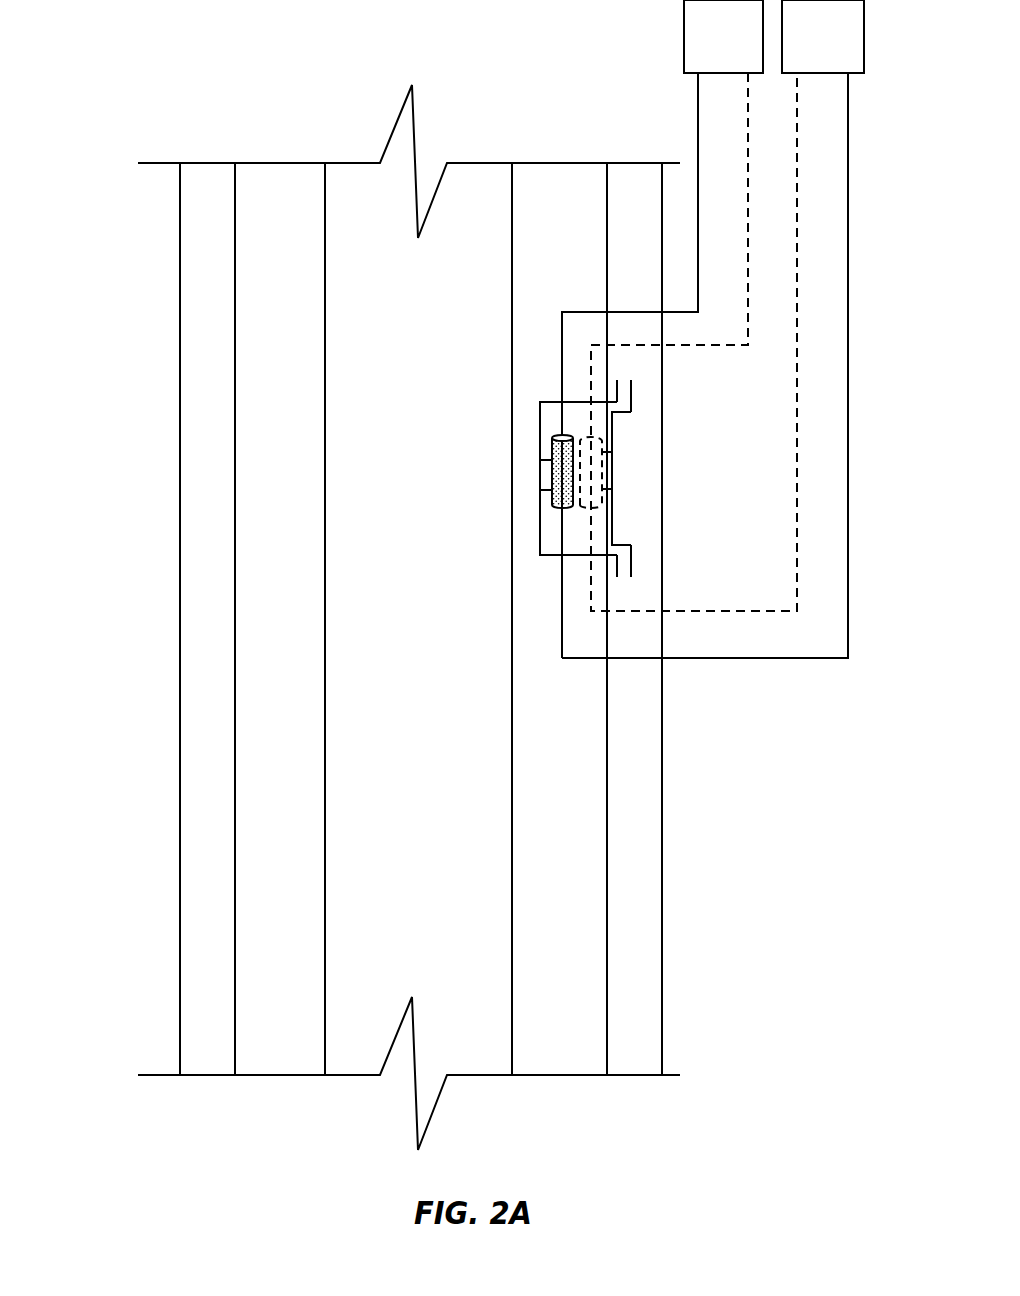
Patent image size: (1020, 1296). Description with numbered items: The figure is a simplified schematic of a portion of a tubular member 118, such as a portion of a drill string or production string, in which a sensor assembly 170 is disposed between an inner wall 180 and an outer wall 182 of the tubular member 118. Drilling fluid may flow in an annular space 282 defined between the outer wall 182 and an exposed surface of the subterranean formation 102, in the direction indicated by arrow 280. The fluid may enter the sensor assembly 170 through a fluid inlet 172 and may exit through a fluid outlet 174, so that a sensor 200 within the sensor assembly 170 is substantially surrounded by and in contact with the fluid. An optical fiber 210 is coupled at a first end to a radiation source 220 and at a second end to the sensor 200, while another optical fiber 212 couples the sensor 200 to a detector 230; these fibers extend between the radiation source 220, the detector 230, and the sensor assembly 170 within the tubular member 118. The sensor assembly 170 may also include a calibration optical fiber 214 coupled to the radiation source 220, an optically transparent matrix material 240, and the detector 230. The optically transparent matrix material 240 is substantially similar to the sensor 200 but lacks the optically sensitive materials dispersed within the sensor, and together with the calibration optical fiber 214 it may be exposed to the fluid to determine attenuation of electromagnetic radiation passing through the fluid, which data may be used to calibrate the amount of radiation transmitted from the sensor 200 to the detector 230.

The subterranean formation 102 is at (72, 519).
The tubular member 118 is at (256, 423).
The sensor assembly 170 is at (530, 513).
The fluid inlet 172 is at (631, 563).
The fluid outlet 174 is at (631, 385).
The inner wall 180 is at (325, 736).
The outer wall 182 is at (235, 705).
The sensor 200 is at (552, 452).
The optical fiber 210 is at (848, 107).
The another optical fiber 212 is at (698, 115).
The calibration optical fiber 214 is at (797, 172).
The radiation source 220 is at (804, 50).
The detector 230 is at (703, 50).
The optically transparent matrix material 240 is at (612, 452).
The arrow 280 is at (635, 705).
The annular space 282 is at (186, 914).